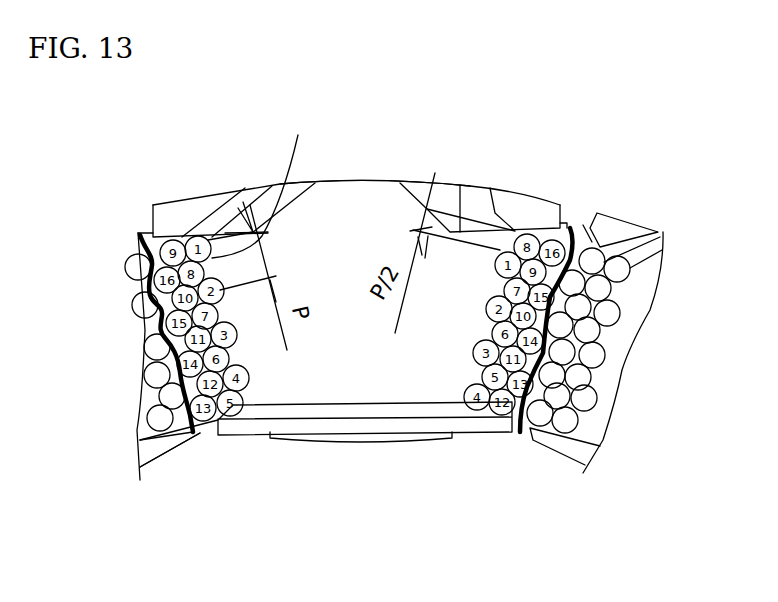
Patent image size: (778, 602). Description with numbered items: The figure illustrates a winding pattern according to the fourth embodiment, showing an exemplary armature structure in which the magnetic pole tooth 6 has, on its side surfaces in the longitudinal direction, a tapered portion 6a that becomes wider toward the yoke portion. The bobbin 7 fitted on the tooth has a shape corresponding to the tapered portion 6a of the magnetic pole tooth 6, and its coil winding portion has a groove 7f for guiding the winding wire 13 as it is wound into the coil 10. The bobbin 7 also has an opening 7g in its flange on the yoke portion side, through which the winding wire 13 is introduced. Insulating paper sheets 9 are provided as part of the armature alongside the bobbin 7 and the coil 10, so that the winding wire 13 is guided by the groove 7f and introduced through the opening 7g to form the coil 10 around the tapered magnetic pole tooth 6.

The winding wire 13 is at (172, 249).
The groove 7f is at (261, 182).
The opening 7g is at (347, 193).
The bobbin 7 is at (535, 220).
The insulating paper sheet 9 is at (597, 245).
The magnetic pole tooth 6 is at (330, 440).
The tapered portion 6a is at (447, 437).
The coil 10 is at (213, 430).